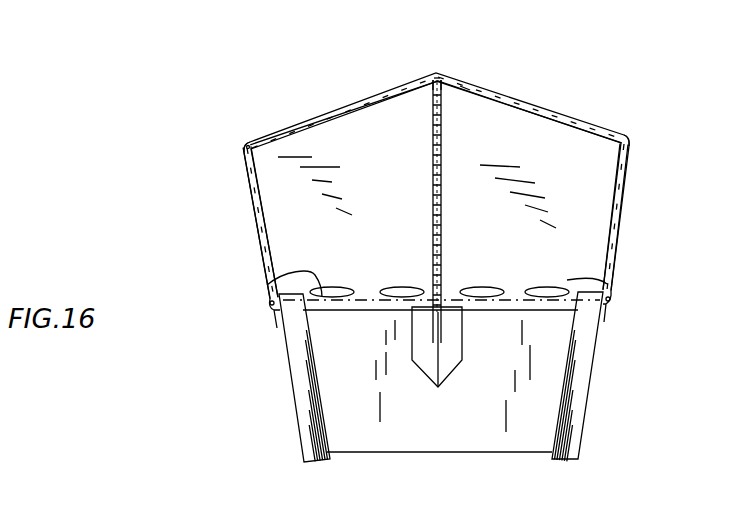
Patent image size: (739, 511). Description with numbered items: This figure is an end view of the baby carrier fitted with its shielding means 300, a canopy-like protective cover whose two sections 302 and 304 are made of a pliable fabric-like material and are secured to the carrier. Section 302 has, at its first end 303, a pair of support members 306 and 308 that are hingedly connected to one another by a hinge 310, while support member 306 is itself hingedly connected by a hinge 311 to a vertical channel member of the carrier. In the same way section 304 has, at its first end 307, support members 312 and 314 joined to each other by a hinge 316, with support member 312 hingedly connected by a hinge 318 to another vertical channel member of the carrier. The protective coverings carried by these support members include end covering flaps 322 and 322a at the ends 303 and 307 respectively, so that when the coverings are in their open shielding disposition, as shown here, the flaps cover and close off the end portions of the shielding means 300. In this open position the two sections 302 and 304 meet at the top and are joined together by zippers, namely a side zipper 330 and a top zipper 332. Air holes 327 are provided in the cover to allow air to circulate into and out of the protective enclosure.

The shielding means 300 is at (302, 106).
The section 302 is at (228, 199).
The first end 303 is at (271, 378).
The section 304 is at (663, 192).
The support member 306 is at (258, 256).
The first end 307 is at (604, 376).
The support member 308 is at (352, 103).
The hinge 310 is at (247, 147).
The hinge 311 is at (275, 325).
The support member 312 is at (621, 263).
The support member 314 is at (600, 126).
The hinge 316 is at (627, 148).
The hinge 318 is at (608, 322).
The end covering flap 322 is at (412, 102).
The end covering flap 322a is at (478, 118).
The air holes 327 is at (267, 285).
The side zipper 330 is at (442, 201).
The top zipper 332 is at (440, 77).